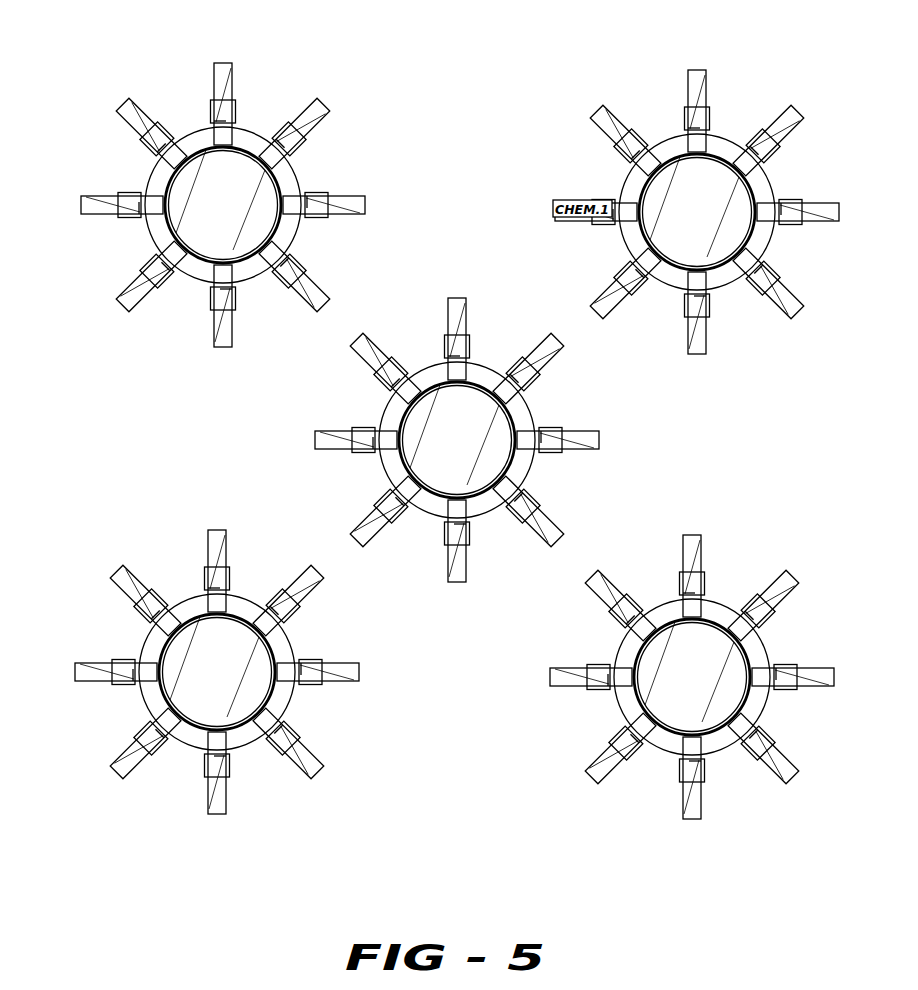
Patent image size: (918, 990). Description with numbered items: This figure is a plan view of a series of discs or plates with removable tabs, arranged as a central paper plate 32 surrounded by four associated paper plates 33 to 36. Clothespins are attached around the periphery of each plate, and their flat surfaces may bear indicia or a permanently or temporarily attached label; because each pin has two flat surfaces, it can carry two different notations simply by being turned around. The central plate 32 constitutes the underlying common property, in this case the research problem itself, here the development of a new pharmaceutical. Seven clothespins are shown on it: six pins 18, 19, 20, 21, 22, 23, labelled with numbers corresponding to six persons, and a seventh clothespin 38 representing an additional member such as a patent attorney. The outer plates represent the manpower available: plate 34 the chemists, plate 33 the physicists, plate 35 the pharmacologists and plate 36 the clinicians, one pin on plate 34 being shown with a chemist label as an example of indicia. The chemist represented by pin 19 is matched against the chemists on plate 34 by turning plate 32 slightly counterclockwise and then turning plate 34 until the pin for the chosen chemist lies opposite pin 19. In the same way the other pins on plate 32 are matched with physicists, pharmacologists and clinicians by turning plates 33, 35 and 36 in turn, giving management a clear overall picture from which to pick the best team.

The pin 18 is at (373, 369).
The pin 19 is at (558, 426).
The pin 20 is at (540, 512).
The pin 21 is at (442, 541).
The pin 22 is at (375, 512).
The pin 23 is at (355, 423).
The central paper plate 32 is at (457, 440).
The paper plate 33 is at (223, 205).
The paper plate 34 is at (697, 212).
The paper plate 35 is at (692, 677).
The paper plate 36 is at (217, 672).
The clothespin 38 is at (472, 328).